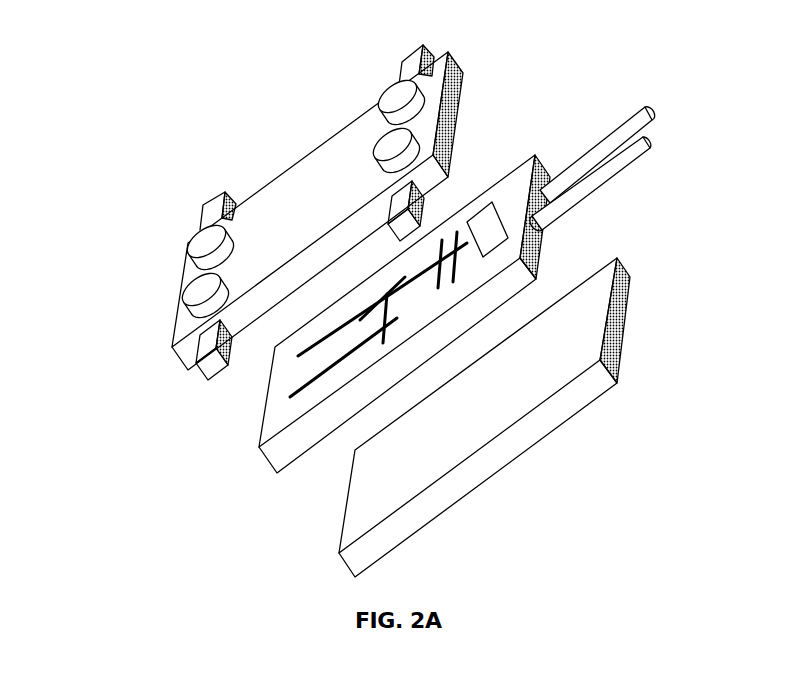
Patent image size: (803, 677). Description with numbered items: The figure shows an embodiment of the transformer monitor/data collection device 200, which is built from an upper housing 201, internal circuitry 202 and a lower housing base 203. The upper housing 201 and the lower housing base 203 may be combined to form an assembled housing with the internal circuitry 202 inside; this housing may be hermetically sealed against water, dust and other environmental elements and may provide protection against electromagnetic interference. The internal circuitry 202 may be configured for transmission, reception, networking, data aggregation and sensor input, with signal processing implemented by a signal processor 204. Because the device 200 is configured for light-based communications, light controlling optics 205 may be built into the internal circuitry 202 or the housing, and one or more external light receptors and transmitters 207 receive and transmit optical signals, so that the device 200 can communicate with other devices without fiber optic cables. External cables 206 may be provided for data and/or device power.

The transformer monitor/data collection device 200 is at (172, 500).
The upper housing 201 is at (172, 305).
The internal circuitry 202 is at (260, 410).
The lower housing base 203 is at (338, 503).
The signal processor 204 is at (488, 222).
The light controlling optics 205 is at (451, 240).
The external cables 206 is at (590, 143).
The external light receptors and transmitters 207 is at (197, 238).